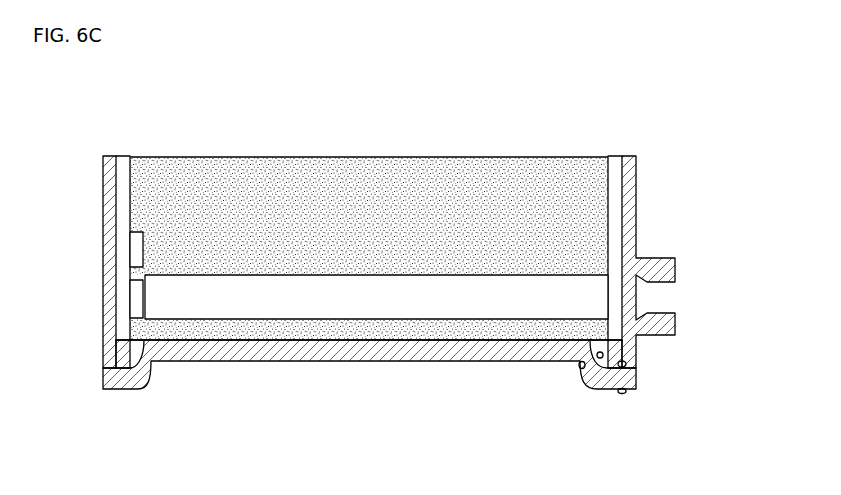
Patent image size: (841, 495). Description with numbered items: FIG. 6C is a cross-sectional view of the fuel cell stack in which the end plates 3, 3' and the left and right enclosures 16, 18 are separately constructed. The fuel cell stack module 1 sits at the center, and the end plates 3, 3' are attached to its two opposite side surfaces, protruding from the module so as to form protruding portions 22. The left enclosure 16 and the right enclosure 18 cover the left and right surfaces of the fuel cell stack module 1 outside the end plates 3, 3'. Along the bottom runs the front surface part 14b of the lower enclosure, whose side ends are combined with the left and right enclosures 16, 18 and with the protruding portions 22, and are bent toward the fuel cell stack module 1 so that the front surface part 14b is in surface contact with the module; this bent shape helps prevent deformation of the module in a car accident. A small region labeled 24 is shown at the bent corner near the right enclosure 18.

The fuel cell stack module 1 is at (393, 168).
The end plate 3 is at (130, 212).
The end plate 3' is at (606, 212).
The left enclosure 16 is at (110, 188).
The right enclosure 18 is at (630, 186).
The front surface part of the lower enclosure 14b is at (428, 352).
The adhesive 24 is at (582, 368).
The protruding portion 22 is at (620, 393).